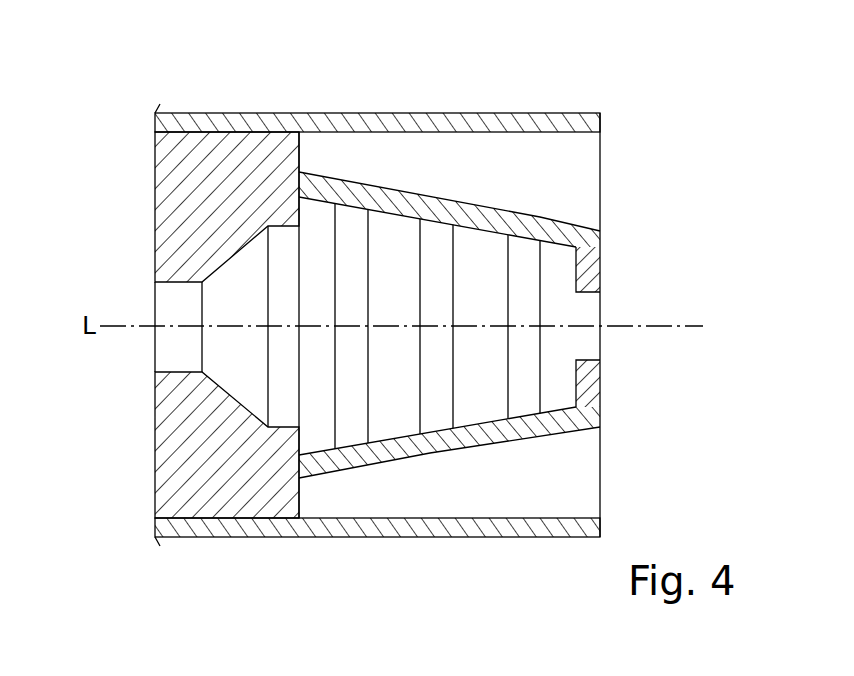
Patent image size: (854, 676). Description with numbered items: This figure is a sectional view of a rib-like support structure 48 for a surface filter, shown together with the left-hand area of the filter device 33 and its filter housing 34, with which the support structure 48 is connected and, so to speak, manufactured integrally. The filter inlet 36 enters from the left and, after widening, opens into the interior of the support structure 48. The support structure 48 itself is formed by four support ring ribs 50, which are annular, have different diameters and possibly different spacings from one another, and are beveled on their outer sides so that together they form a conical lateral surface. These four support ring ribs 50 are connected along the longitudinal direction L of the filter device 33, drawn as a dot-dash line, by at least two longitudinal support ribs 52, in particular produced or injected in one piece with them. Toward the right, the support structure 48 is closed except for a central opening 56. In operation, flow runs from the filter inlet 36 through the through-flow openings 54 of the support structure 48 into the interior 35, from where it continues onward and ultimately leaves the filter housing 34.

The filter device 33 is at (640, 103).
The filter housing 34 is at (467, 121).
The interior 35 is at (381, 164).
The filter inlet 36 is at (168, 350).
The support structure 48 is at (578, 204).
The support ring ribs 50 is at (527, 272).
The longitudinal support ribs 52 is at (530, 210).
The through-flow openings 54 is at (317, 250).
The central opening 56 is at (590, 303).